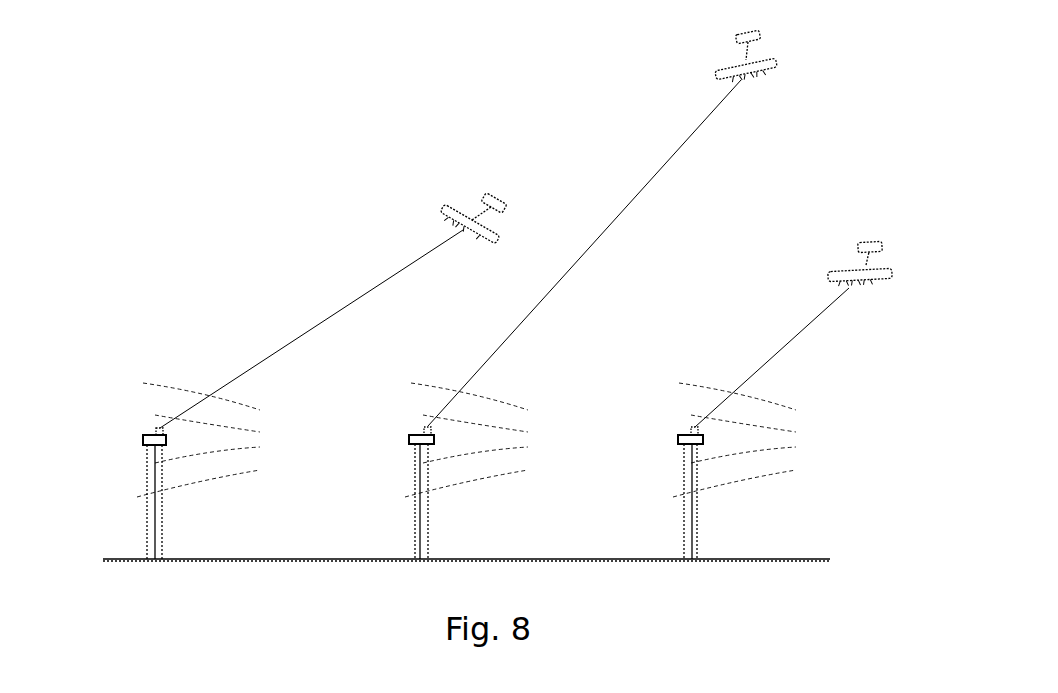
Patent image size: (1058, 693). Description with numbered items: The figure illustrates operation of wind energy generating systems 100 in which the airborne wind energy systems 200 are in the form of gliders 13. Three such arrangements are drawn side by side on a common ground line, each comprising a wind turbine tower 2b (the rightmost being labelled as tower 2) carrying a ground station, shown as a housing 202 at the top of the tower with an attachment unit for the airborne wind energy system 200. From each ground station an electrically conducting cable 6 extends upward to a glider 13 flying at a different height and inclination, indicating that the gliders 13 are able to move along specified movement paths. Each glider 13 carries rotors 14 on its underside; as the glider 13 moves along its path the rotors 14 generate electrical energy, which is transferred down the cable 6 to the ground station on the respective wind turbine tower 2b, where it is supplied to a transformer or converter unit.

The glider 13 is at (723, 42).
The rotor 14 is at (756, 73).
The electrically conducting cable 6 is at (355, 298).
The airborne wind energy system 200 is at (158, 428).
The base station housing 202 is at (162, 442).
The wind energy generating system 100 is at (127, 525).
The wind turbine tower 2b is at (155, 522).
The pole 2 is at (692, 525).